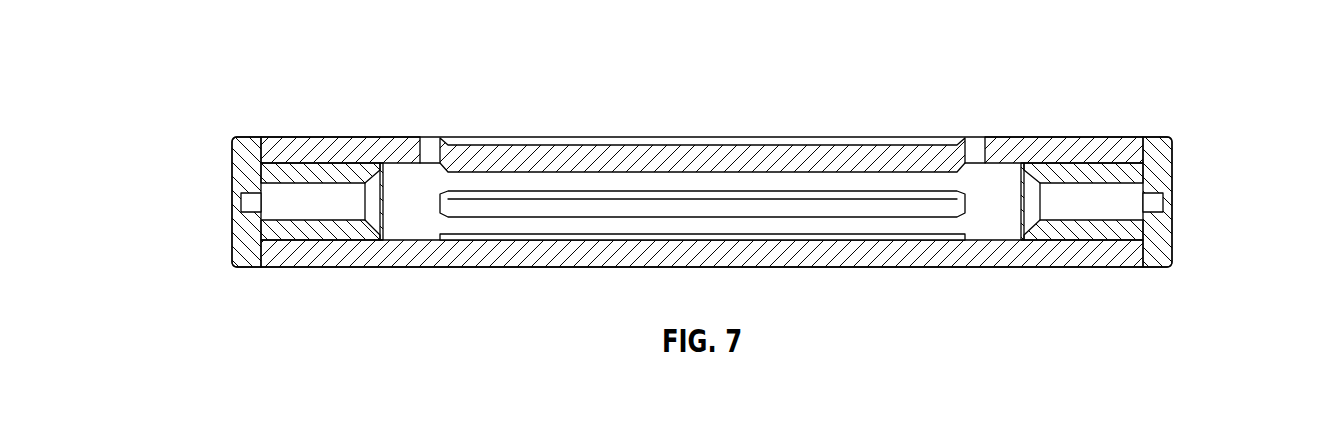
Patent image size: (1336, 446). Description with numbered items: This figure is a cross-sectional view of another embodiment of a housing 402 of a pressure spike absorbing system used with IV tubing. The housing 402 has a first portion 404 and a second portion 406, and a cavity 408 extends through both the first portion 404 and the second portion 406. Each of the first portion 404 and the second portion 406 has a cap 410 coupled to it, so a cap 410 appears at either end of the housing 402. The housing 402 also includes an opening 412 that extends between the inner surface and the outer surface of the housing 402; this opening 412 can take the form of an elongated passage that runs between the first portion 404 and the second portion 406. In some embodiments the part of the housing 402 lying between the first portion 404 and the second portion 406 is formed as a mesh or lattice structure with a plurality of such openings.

The housing 402 is at (702, 173).
The first portion 404 is at (306, 137).
The second portion 406 is at (1083, 137).
The cavity 408 is at (541, 191).
The cap 410 is at (238, 245).
The opening 412 is at (810, 148).